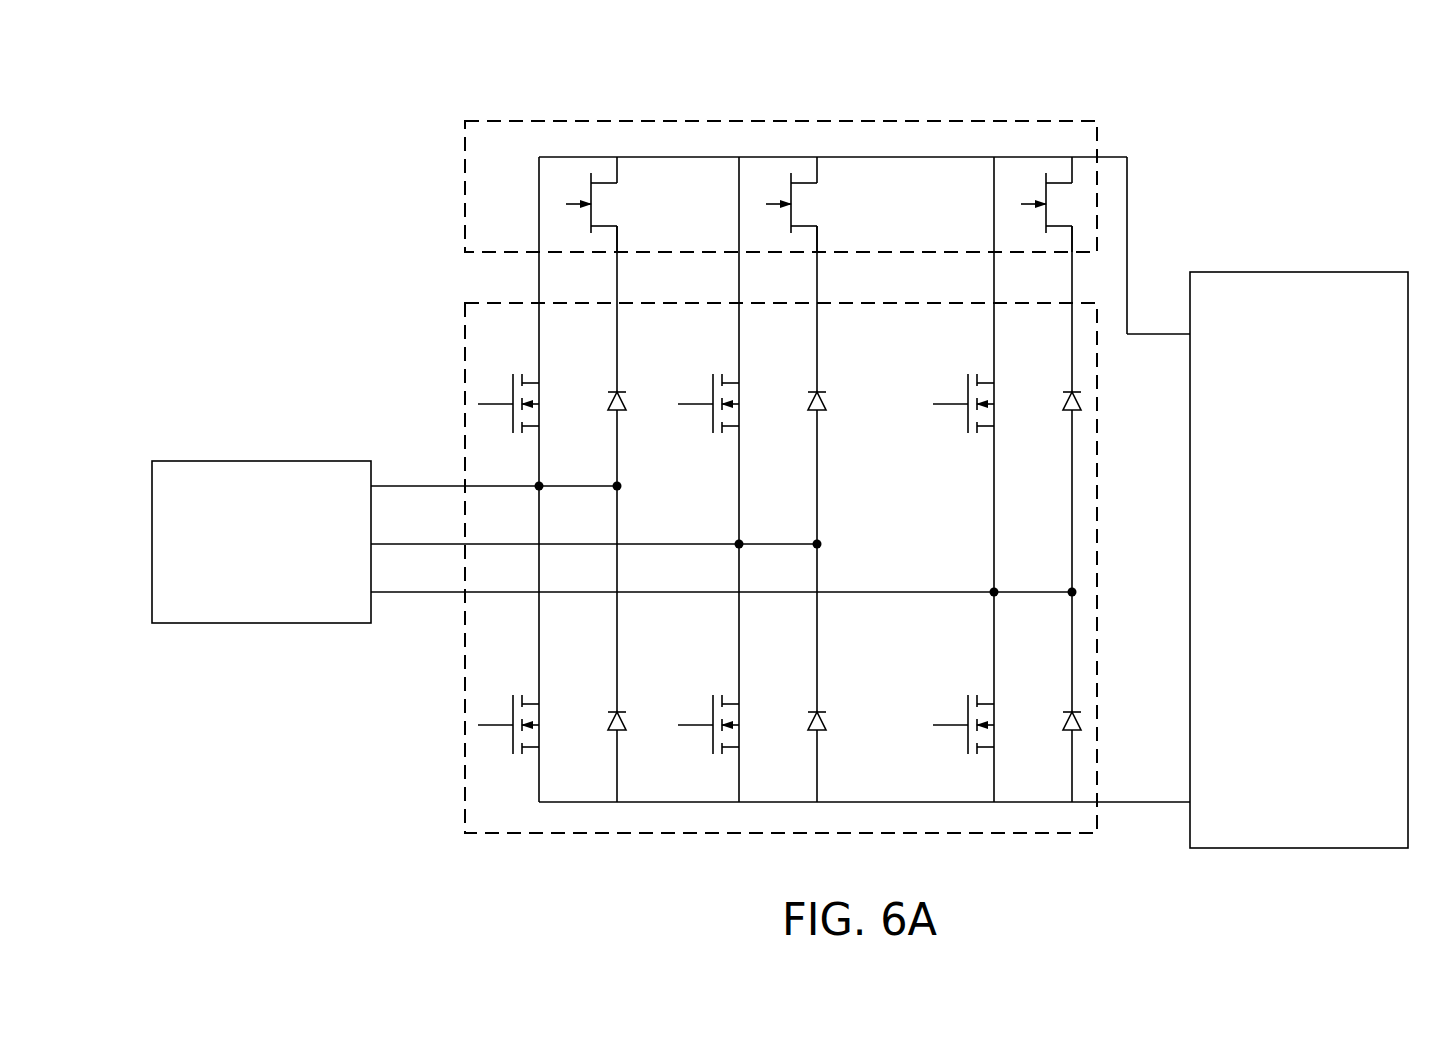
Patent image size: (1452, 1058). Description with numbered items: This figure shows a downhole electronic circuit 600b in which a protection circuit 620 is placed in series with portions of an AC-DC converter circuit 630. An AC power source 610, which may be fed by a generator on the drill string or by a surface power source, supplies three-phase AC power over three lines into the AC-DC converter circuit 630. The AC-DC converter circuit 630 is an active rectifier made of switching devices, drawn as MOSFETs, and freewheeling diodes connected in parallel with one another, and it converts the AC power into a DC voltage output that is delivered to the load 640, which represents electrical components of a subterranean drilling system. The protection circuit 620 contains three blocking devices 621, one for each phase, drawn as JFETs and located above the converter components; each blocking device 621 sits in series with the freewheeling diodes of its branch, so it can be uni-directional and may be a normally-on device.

The downhole electronic circuit 600b is at (1302, 130).
The AC power source 610 is at (261, 542).
The protection circuit 620 is at (464, 124).
The blocking device 621 is at (1021, 182).
The AC-DC converter circuit 630 is at (464, 304).
The load 640 is at (1299, 560).